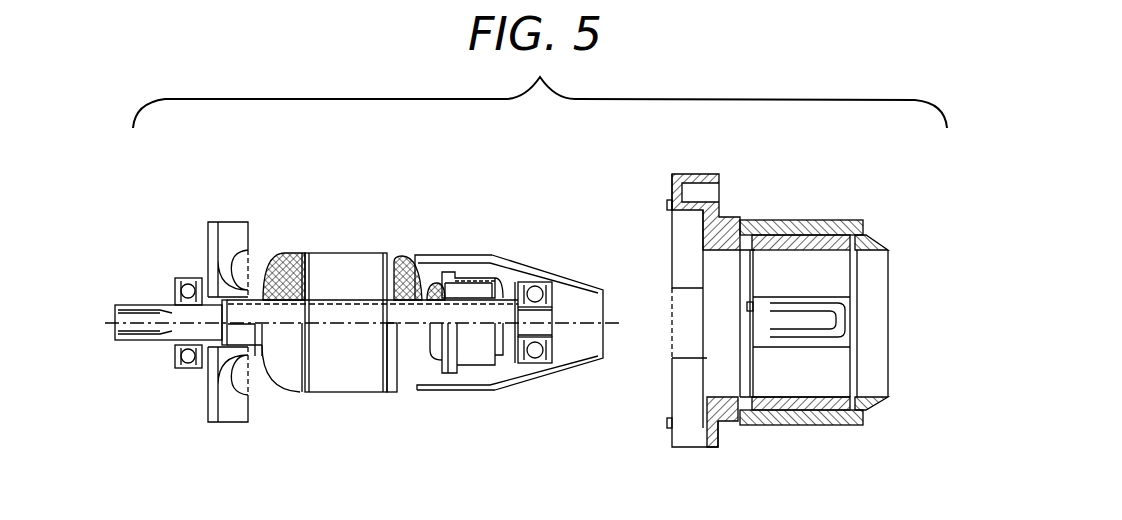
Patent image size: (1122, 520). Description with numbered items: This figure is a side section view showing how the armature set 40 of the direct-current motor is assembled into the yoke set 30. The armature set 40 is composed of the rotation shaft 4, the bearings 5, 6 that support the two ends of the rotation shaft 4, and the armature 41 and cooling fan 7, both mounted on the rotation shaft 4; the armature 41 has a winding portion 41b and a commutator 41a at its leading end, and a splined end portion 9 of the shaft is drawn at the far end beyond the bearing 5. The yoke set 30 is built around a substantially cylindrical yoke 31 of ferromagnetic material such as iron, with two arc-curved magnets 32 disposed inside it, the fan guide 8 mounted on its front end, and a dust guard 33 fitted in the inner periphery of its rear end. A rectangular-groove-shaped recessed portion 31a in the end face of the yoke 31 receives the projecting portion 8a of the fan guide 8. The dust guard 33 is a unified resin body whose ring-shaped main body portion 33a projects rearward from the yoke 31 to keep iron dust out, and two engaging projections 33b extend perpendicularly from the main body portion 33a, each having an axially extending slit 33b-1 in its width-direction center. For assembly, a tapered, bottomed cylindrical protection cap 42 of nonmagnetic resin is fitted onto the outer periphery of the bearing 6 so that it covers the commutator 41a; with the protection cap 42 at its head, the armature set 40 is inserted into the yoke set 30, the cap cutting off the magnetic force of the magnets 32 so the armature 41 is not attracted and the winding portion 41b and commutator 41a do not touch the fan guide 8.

The rotation shaft 4 is at (243, 337).
The bearing 5 is at (185, 282).
The bearing 6 is at (535, 288).
The cooling fan 7 is at (240, 228).
The fan guide 8 is at (720, 174).
The projecting portion 8a is at (752, 310).
The output shaft 9 is at (138, 343).
The yoke set 30 is at (800, 192).
The yoke 31 is at (852, 222).
The recessed portion 31a is at (750, 330).
The magnets 32 is at (828, 367).
The dust guard 33 is at (880, 412).
The main body portion 33a is at (875, 268).
The engaging projections 33b is at (810, 340).
The slits 33b-1 is at (775, 337).
The armature set 40 is at (447, 236).
The armature 41 is at (335, 270).
The commutator 41a is at (472, 358).
The winding portion 41b is at (410, 256).
The protection cap 42 is at (578, 288).